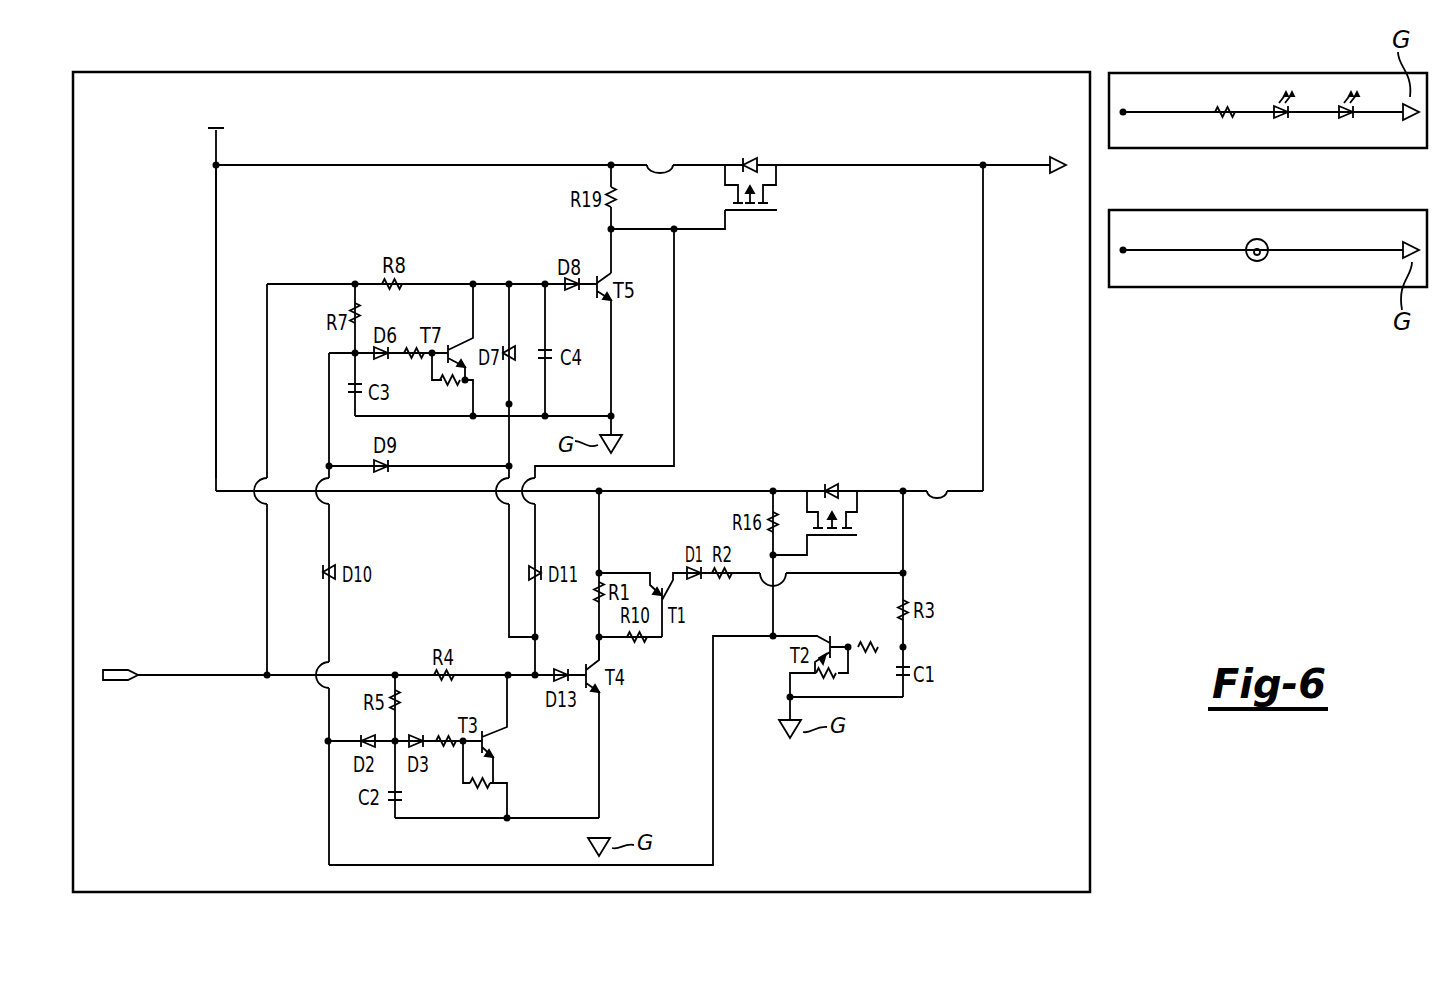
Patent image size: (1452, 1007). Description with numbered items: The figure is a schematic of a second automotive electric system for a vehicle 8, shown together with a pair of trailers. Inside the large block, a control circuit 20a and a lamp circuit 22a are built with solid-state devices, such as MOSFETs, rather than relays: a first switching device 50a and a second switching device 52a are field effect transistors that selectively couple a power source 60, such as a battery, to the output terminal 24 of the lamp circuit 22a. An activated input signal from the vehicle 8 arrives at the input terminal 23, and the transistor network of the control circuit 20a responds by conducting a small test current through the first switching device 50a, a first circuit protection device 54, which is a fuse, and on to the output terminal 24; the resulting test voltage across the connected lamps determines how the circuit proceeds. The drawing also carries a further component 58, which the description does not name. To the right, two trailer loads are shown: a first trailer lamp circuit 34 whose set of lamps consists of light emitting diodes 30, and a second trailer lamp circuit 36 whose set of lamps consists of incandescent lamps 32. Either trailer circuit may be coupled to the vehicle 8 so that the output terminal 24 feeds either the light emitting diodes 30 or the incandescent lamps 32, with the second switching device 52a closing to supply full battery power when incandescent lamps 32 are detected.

The vehicle 8 is at (782, 64).
The power source 60 is at (222, 98).
The lamp circuit 22a is at (204, 209).
The output supply line 58 is at (663, 158).
The second switching device 52a is at (769, 161).
The output terminal 24 is at (1057, 160).
The input terminal 23 is at (113, 668).
The control circuit 20a is at (306, 690).
The first switching device 50a is at (831, 475).
The first circuit protection device 54 is at (947, 487).
The first trailer lamp circuit 34 is at (1152, 72).
The light emitting diodes 30 is at (1272, 107).
The second trailer lamp circuit 36 is at (1168, 288).
The incandescent lamps 32 is at (1255, 262).